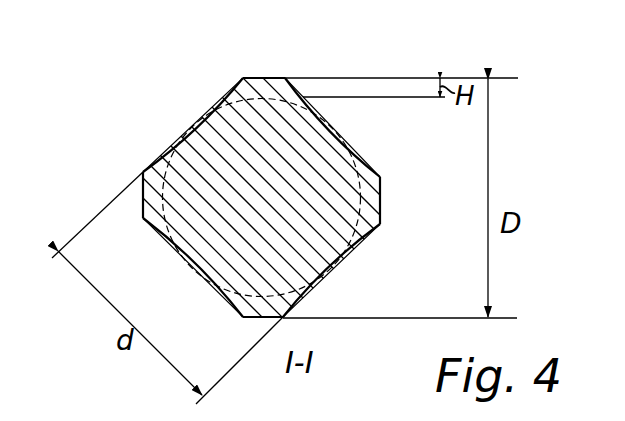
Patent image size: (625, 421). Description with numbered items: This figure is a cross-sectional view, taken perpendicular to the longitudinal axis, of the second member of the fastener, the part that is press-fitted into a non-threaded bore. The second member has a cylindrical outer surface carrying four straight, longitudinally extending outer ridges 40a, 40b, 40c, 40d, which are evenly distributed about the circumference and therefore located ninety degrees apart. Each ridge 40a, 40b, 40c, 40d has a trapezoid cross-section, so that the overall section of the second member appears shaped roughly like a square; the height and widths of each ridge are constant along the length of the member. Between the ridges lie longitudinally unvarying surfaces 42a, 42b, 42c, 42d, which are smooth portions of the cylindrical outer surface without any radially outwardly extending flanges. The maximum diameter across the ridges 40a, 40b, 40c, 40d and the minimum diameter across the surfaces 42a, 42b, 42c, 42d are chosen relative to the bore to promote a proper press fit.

The outer ridge 40a is at (268, 77).
The outer ridge 40b is at (381, 194).
The outer ridge 40c is at (263, 318).
The outer ridge 40d is at (143, 195).
The longitudinally unvarying surface 42a is at (337, 128).
The longitudinally unvarying surface 42b is at (333, 265).
The longitudinally unvarying surface 42c is at (195, 269).
The longitudinally unvarying surface 42d is at (187, 133).